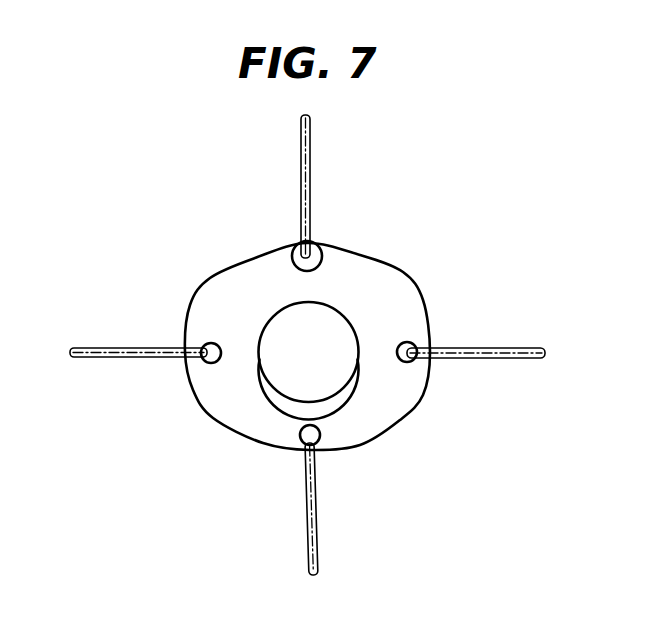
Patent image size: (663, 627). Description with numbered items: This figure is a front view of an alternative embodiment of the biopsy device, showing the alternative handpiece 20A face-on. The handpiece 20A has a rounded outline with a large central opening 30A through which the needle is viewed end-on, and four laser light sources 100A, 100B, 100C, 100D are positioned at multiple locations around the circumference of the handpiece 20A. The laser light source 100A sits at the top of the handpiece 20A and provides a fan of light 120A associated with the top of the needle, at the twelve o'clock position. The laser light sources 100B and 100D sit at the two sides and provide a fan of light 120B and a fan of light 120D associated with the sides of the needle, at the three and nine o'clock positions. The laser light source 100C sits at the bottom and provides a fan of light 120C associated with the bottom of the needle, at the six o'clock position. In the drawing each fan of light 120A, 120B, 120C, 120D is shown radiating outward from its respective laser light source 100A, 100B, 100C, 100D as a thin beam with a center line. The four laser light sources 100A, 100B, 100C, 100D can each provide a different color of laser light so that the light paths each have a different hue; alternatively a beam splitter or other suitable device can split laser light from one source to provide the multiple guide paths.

The handpiece 20A is at (207, 282).
The central aperture 30A is at (258, 361).
The laser light source 100A is at (295, 250).
The laser light source 100B is at (412, 343).
The laser light source 100C is at (300, 440).
The laser light source 100D is at (204, 344).
The fan of light 120A is at (310, 185).
The fan of light 120B is at (505, 358).
The fan of light 120C is at (317, 537).
The fan of light 120D is at (110, 357).